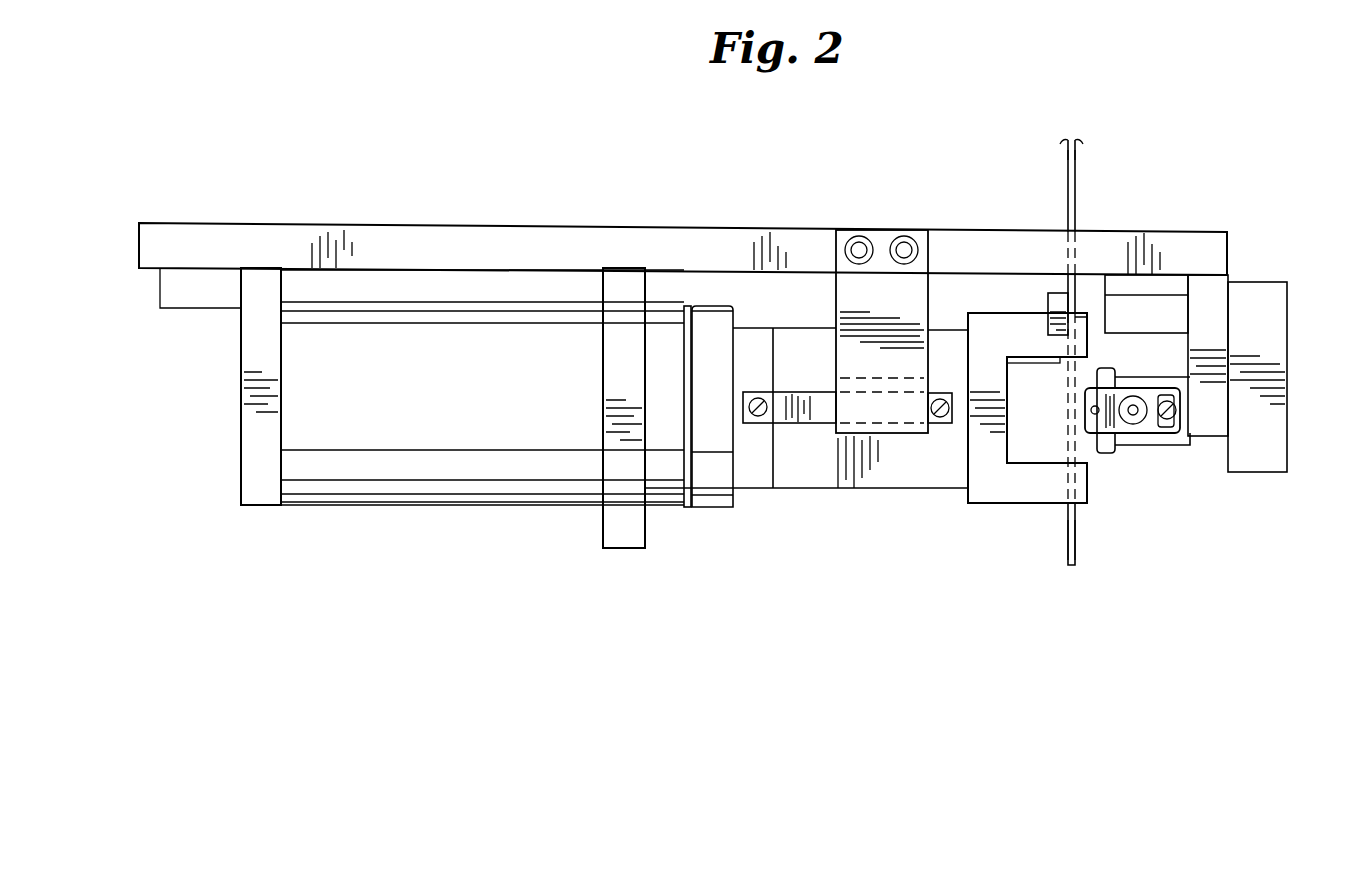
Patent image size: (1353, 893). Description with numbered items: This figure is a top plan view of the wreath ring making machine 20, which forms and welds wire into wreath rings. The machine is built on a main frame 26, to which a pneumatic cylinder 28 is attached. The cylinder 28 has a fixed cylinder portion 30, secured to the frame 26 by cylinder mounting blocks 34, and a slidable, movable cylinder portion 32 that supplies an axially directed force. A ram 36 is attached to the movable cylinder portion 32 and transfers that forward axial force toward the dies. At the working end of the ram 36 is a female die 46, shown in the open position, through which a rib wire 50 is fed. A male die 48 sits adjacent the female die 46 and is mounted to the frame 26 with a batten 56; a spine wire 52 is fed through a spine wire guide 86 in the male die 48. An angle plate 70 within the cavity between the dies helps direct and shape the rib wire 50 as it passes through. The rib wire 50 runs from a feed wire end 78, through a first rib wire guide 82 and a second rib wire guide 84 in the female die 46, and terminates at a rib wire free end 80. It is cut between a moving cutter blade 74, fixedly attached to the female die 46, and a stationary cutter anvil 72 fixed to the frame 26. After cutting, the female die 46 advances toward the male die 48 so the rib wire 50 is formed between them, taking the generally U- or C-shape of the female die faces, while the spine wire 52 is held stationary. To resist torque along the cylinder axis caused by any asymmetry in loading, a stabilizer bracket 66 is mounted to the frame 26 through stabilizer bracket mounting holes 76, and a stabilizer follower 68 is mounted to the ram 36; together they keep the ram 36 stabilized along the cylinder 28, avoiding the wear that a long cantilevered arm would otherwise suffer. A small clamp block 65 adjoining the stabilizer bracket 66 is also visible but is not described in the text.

The wreath ring making machine 20 is at (876, 176).
The main frame 26 is at (448, 250).
The pneumatic cylinder 28 is at (452, 468).
The fixed cylinder portion 30 is at (667, 494).
The movable cylinder portion 32 is at (710, 495).
The cylinder mounting blocks 34 is at (264, 287).
The ram 36 is at (875, 500).
The female die 46 is at (1012, 505).
The male die 48 is at (1148, 460).
The rib wire 50 is at (1078, 165).
The spine wire 52 is at (1090, 422).
The batten 56 is at (1203, 440).
The clamp block 65 is at (866, 226).
The stabilizer bracket 66 is at (888, 230).
The stabilizer follower 68 is at (815, 416).
The angle plate 70 is at (1027, 367).
The stationary cutter anvil 72 is at (1148, 283).
The moving cutter blade 74 is at (1048, 300).
The stabilizer bracket mounting holes 76 is at (908, 248).
The feed wire end 78 is at (1078, 224).
The rib wire free end 80 is at (1066, 533).
The first rib wire guide 82 is at (1087, 333).
The second rib wire guide 84 is at (1065, 485).
The spine wire guide 86 is at (1108, 400).